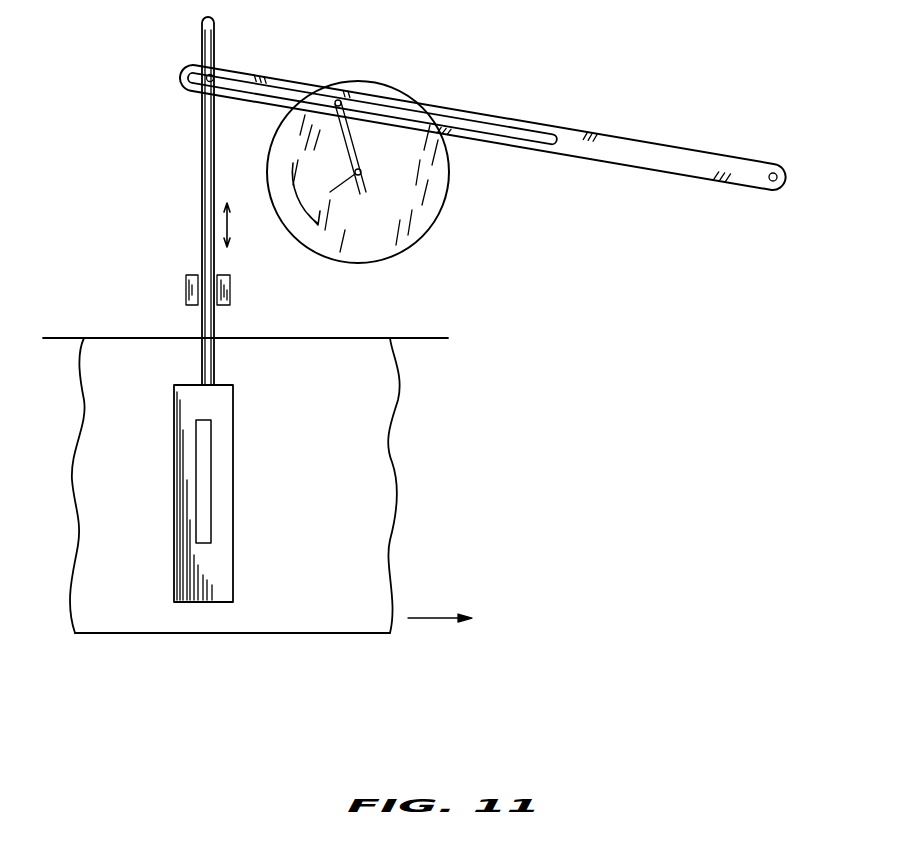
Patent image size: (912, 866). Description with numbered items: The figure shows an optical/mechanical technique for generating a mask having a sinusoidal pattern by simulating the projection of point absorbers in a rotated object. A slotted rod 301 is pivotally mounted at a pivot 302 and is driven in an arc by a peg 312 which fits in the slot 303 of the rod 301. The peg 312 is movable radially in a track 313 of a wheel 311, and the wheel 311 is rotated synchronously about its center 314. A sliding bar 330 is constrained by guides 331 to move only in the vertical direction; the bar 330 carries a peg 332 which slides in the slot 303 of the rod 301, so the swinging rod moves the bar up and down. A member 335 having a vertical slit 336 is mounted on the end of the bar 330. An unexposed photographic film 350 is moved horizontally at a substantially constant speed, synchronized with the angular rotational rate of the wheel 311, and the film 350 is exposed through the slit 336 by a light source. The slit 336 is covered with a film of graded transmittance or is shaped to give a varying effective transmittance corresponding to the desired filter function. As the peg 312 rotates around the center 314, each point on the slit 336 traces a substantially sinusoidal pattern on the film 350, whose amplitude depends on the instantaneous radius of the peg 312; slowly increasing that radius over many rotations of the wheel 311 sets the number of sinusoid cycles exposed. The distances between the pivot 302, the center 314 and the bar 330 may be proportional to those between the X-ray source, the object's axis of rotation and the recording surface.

The slotted rod 301 is at (604, 135).
The pivot 302 is at (776, 171).
The slot 303 is at (490, 130).
The wheel 311 is at (413, 230).
The peg 312 is at (340, 100).
The track 313 is at (353, 152).
The center 314 is at (373, 193).
The sliding bar 330 is at (204, 134).
The guides 331 is at (232, 290).
The peg 332 is at (213, 76).
The member 335 is at (235, 400).
The vertical slit 336 is at (202, 483).
The photographic film 350 is at (288, 617).